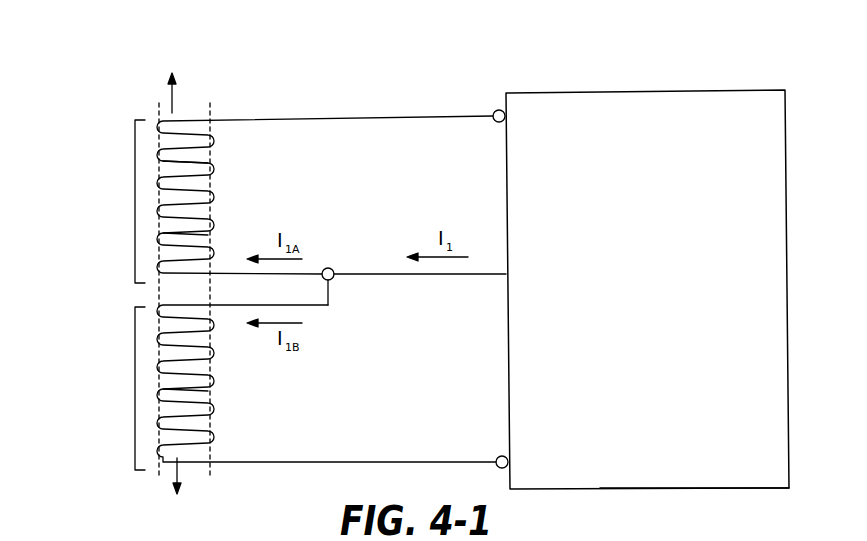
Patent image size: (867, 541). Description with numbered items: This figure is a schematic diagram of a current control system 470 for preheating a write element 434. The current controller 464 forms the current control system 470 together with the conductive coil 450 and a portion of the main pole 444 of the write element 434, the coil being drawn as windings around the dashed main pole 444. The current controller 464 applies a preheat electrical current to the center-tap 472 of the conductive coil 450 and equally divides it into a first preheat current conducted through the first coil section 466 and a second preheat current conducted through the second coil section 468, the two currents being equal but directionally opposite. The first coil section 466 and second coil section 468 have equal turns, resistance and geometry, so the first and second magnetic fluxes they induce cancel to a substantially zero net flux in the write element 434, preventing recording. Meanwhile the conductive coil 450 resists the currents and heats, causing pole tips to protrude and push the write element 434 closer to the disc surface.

The write element 434 is at (267, 283).
The main pole 444 is at (197, 162).
The conductive coil 450 is at (194, 233).
The current controller 464 is at (758, 488).
The first coil section 466 is at (300, 199).
The second coil section 468 is at (301, 387).
The current control system 470 is at (687, 68).
The center-tap 472 is at (334, 280).